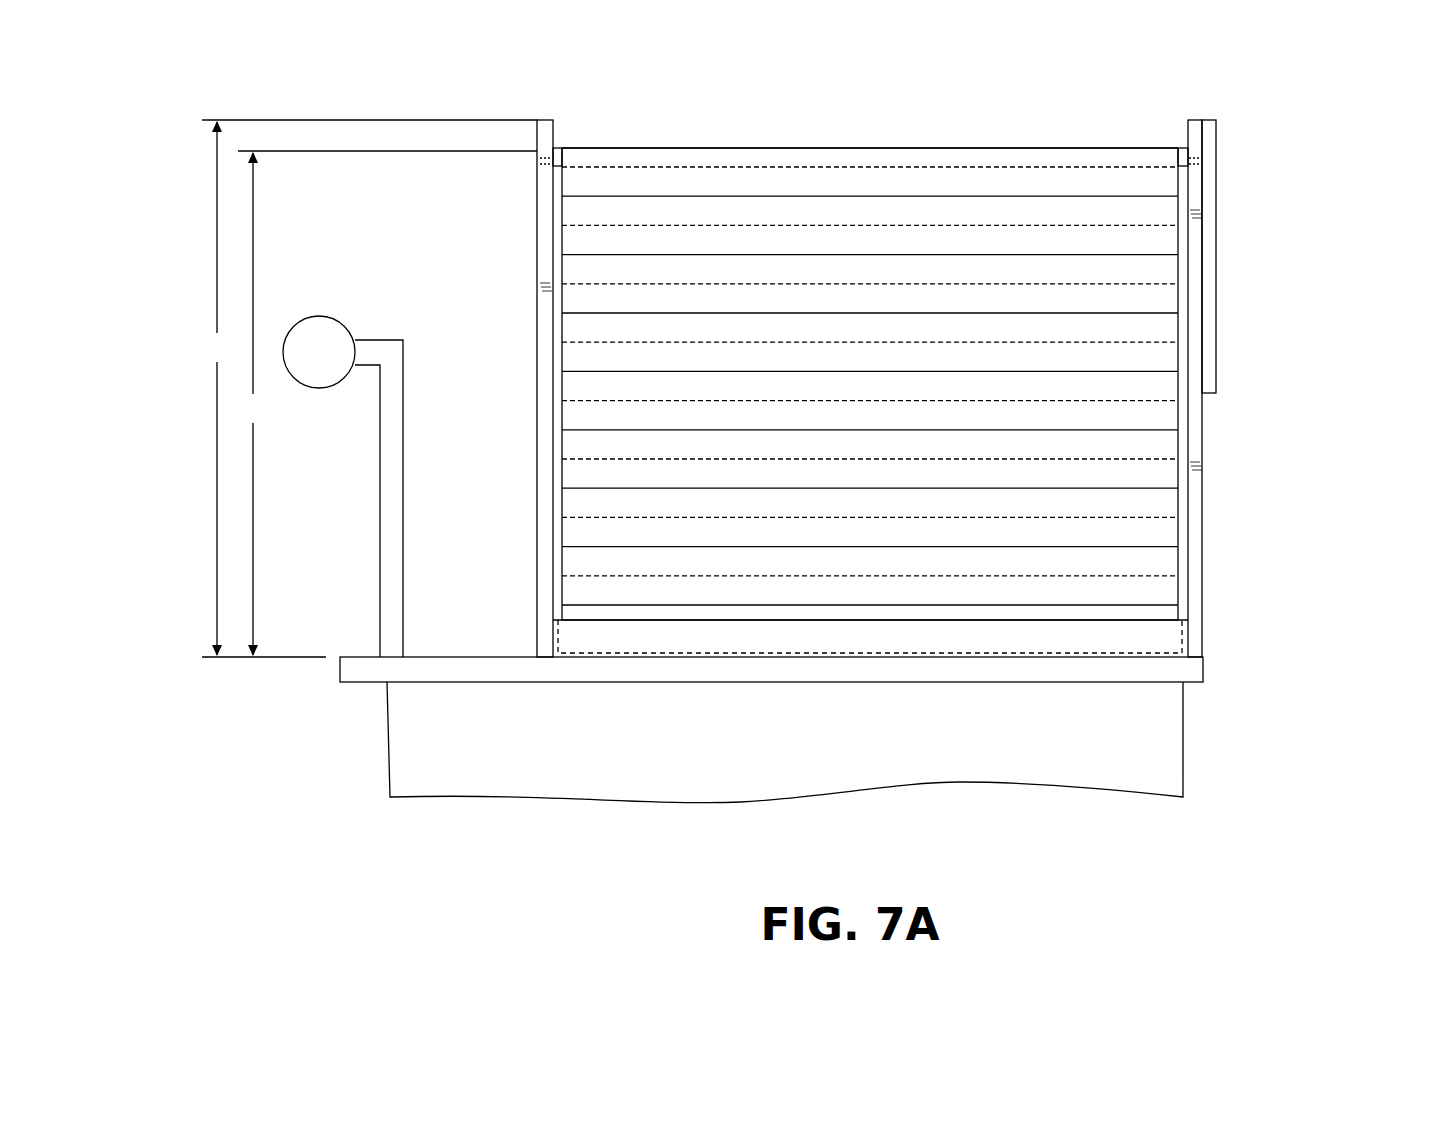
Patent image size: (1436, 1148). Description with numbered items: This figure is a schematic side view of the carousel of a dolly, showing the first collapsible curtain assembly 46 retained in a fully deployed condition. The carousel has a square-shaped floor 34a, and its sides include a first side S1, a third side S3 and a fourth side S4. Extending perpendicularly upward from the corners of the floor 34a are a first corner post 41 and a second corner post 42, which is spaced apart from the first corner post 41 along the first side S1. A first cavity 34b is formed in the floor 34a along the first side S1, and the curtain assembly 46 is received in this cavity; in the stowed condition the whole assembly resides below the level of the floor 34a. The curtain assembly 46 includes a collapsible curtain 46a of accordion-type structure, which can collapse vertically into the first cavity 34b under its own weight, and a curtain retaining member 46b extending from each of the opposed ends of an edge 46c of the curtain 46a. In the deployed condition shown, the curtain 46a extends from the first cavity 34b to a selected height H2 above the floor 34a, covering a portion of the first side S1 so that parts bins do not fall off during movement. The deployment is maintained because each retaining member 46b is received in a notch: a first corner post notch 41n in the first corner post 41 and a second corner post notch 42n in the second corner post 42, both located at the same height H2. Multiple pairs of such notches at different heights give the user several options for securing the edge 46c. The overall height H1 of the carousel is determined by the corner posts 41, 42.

The first corner post 41 is at (546, 262).
The first corner post notch 41n is at (548, 168).
The second corner post 42 is at (1200, 285).
The second corner post notch 42n is at (1195, 173).
The first collapsible curtain assembly 46 is at (896, 338).
The collapsible curtain 46a is at (1135, 418).
The curtain retaining member 46b is at (557, 150).
The edge of the curtain 46c is at (807, 148).
The floor 34a is at (598, 620).
The first cavity 34b is at (621, 655).
The first side S1 is at (905, 550).
The third side S3 is at (1207, 532).
The fourth side S4 is at (535, 345).
The height of the carousel H1 is at (369, 388).
The selected height H2 is at (387, 403).